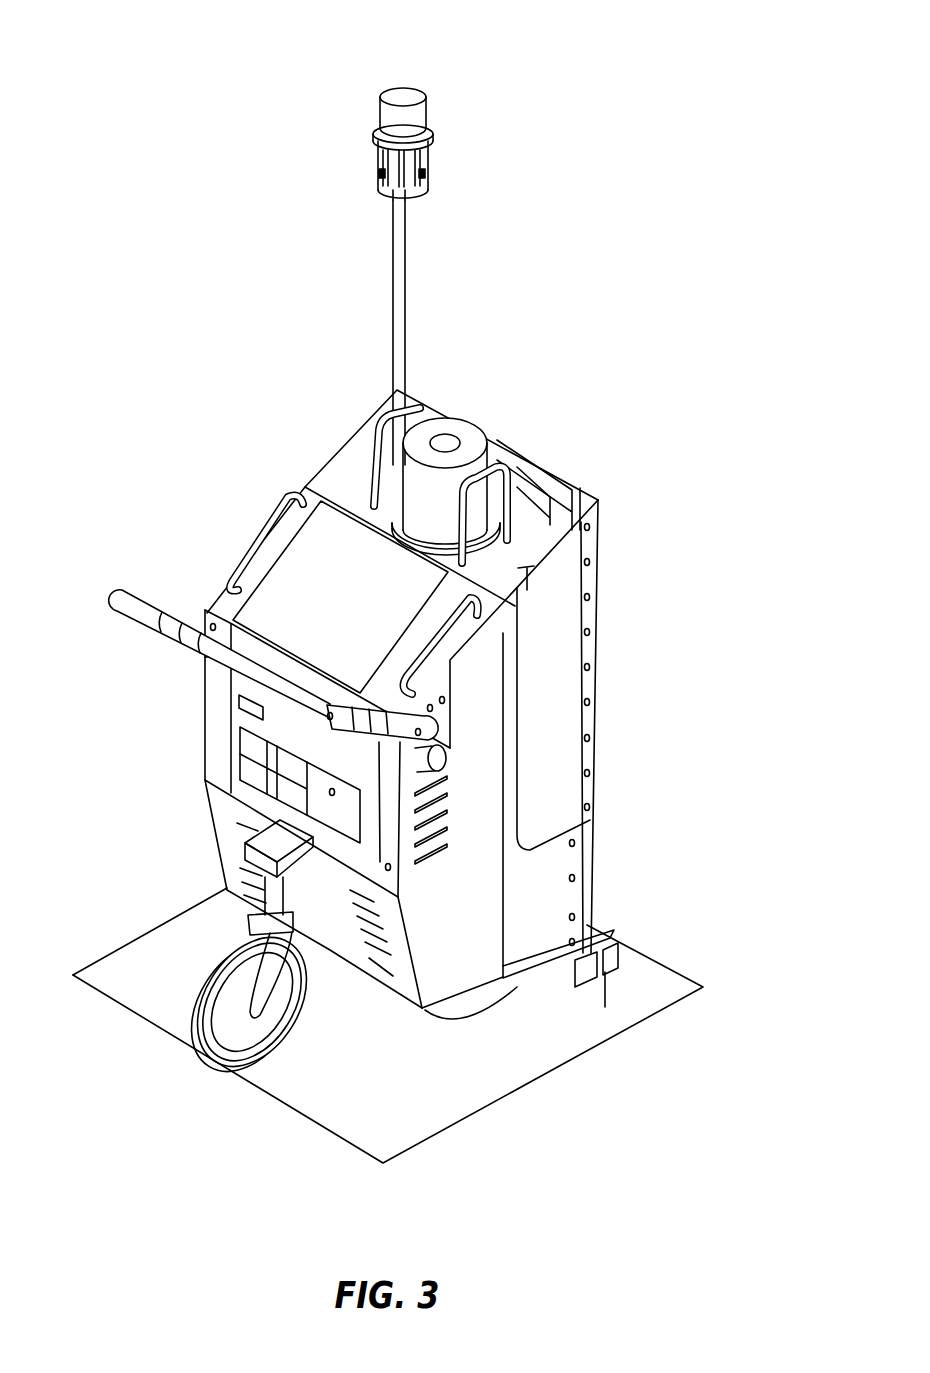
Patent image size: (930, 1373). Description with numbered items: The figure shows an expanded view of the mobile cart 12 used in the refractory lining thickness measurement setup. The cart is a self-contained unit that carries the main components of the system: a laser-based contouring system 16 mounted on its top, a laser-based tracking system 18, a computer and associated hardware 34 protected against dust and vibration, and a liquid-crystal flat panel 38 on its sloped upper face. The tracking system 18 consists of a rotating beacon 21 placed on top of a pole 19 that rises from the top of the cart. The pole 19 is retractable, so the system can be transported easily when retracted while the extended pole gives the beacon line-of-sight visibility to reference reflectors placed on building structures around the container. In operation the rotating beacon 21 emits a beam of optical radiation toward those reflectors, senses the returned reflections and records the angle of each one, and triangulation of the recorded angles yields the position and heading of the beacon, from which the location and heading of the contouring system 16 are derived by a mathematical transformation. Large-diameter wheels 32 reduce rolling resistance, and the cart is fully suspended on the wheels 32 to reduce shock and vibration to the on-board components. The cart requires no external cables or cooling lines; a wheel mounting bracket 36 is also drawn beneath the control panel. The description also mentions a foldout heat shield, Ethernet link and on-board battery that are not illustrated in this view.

The mobile cart 12 is at (700, 158).
The contouring system 16 is at (472, 430).
The tracking system 18 is at (362, 85).
The pole 19 is at (400, 298).
The rotating beacon 21 is at (428, 95).
The wheels 32 is at (287, 1040).
The computer and associated hardware 34 is at (232, 742).
The caster bracket 36 is at (243, 841).
The liquid-crystal flat panel 38 is at (310, 567).